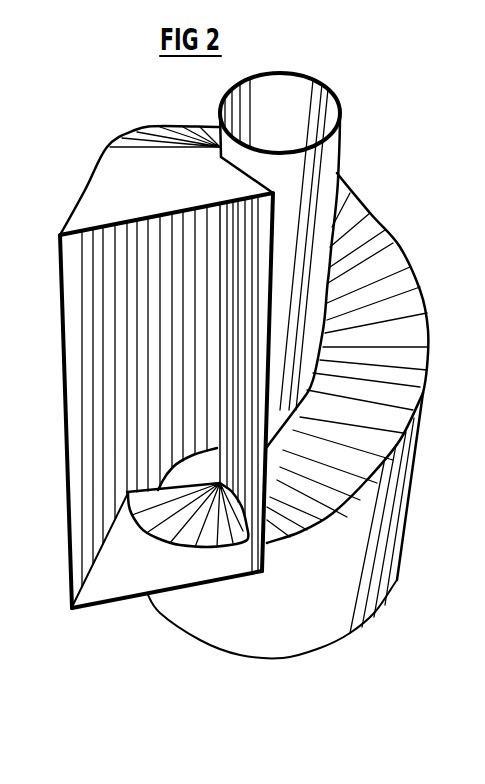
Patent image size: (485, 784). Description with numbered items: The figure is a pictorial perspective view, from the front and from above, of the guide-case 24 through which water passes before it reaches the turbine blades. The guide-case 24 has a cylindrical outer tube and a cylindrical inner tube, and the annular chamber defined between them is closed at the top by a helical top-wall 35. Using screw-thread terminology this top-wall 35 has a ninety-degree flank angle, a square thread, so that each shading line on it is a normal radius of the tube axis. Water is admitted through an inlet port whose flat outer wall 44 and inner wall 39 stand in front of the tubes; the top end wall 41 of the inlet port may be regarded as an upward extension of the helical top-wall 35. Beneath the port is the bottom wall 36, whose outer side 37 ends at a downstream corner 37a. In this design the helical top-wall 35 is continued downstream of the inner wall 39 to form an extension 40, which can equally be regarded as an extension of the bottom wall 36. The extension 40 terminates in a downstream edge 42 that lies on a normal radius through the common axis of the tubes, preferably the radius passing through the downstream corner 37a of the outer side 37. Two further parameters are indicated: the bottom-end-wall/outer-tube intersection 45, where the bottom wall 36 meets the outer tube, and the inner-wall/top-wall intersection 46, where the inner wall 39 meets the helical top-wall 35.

The guide-case 24 is at (383, 265).
The helical top-wall 35 is at (373, 380).
The bottom wall 36 is at (143, 577).
The outer side 37 is at (105, 557).
The downstream corner 37a is at (128, 493).
The inner wall 39 is at (242, 352).
The extension 40 is at (188, 518).
The top end wall 41 is at (147, 197).
The downstream edge 42 is at (172, 478).
The outer wall 44 is at (103, 380).
The bottom-end-wall/outer-tube intersection 45 is at (185, 547).
The inner-wall/top-wall intersection 46 is at (250, 493).